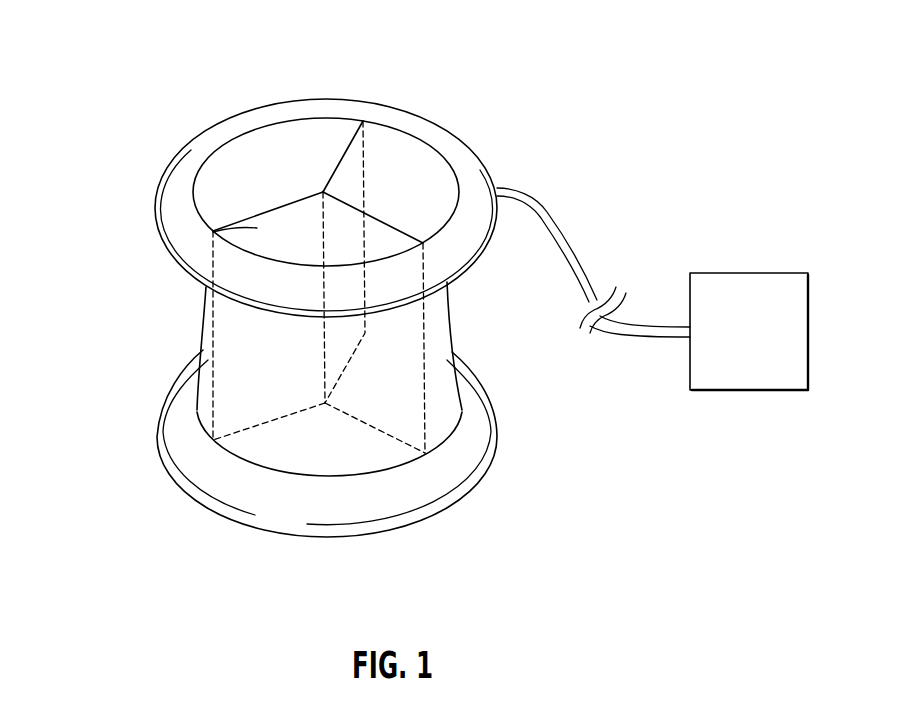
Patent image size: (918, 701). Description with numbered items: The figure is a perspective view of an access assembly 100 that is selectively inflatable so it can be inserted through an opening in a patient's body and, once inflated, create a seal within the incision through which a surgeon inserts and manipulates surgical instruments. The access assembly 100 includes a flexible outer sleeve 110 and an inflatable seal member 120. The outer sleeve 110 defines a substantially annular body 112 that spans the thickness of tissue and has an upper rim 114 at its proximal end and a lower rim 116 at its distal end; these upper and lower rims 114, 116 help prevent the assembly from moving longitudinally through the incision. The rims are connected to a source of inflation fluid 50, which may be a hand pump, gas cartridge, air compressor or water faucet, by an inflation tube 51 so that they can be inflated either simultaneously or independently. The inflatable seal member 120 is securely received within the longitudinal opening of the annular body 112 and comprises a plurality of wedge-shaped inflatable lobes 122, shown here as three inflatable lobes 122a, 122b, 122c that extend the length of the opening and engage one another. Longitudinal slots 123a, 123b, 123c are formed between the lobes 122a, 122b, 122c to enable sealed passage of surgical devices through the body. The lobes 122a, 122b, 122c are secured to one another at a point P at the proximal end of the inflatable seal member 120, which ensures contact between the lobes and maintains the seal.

The access assembly 100 is at (442, 43).
The flexible outer sleeve 110 is at (180, 314).
The annular body 112 is at (450, 313).
The upper rim 114 is at (468, 160).
The lower rim 116 is at (483, 447).
The inflatable seal member 120 is at (300, 68).
The inflatable lobes 122 is at (284, 116).
The point P is at (323, 192).
The inflatable lobe 122a is at (206, 198).
The inflatable lobe 122b is at (223, 230).
The inflatable lobe 122c is at (423, 223).
The longitudinal slot 123a is at (230, 343).
The longitudinal slot 123b is at (410, 367).
The longitudinal slot 123c is at (363, 122).
The source of inflation fluid 50 is at (748, 272).
The inflation tube 51 is at (560, 223).